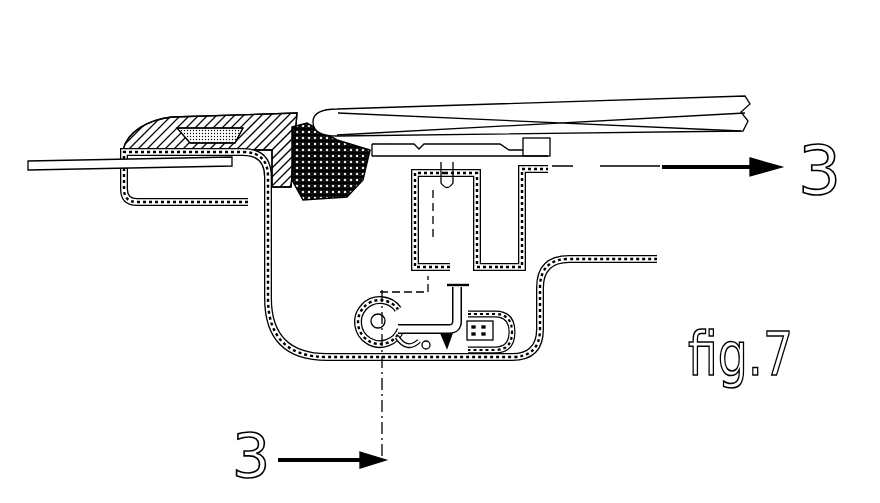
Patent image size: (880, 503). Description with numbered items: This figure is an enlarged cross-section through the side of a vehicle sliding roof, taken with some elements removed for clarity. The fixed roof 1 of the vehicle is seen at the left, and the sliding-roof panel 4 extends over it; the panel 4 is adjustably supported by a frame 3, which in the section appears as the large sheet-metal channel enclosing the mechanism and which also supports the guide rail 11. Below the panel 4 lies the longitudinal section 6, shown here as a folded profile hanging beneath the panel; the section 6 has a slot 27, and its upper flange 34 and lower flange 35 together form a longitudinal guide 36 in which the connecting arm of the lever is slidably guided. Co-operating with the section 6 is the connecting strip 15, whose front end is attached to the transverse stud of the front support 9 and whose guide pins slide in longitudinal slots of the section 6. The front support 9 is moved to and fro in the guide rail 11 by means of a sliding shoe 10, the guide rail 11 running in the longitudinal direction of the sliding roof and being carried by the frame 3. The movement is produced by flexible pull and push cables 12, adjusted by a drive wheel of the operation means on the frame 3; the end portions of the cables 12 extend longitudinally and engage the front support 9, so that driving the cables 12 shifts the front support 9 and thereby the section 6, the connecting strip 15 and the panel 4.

The fixed roof 1 is at (88, 158).
The frame 3 is at (268, 320).
The panel 4 is at (675, 122).
The section 6 is at (409, 208).
The front support 9 is at (447, 348).
The sliding shoe 10 is at (500, 356).
The guide rail 11 is at (417, 343).
The pull and push cables 12 is at (368, 344).
The connecting strip 15 is at (530, 220).
The slot 27 is at (522, 138).
The upper flange 34 is at (447, 170).
The lower flange 35 is at (430, 277).
The longitudinal guide 36 is at (452, 238).